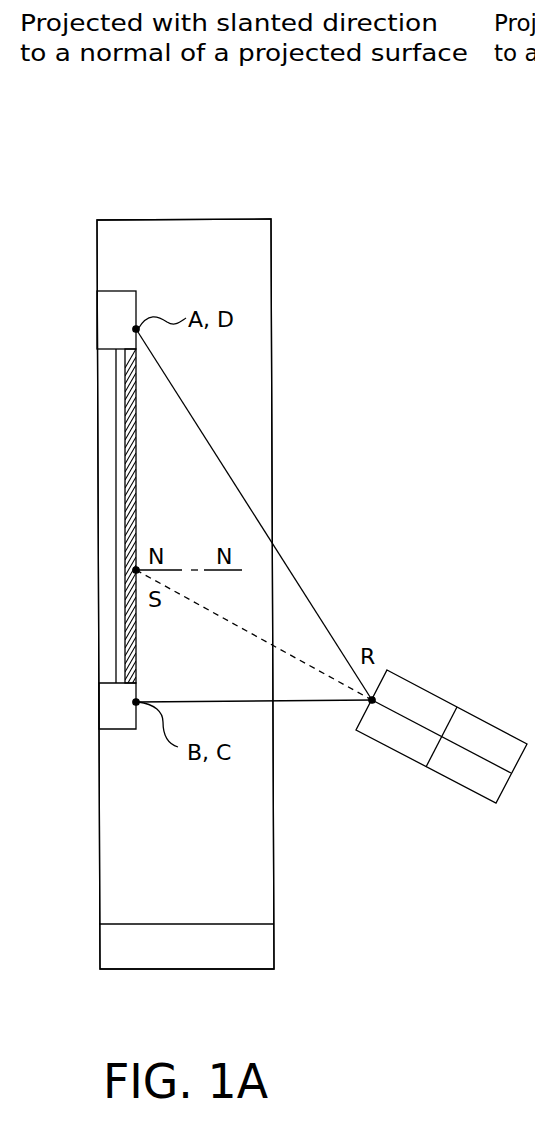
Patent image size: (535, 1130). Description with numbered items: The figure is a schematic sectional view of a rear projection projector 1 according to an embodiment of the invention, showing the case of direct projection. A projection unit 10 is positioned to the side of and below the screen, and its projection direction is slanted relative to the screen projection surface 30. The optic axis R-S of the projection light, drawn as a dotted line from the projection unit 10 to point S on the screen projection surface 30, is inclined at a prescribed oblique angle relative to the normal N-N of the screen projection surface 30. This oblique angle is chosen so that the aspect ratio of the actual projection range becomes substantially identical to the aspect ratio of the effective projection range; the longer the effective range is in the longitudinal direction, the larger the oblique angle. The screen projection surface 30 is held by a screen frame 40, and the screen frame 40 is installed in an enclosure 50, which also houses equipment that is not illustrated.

The rear projection projector 1 is at (266, 171).
The projection unit 10 is at (427, 703).
The screen projection surface 30 is at (128, 542).
The screen frame 40 is at (102, 324).
The enclosure 50 is at (138, 219).